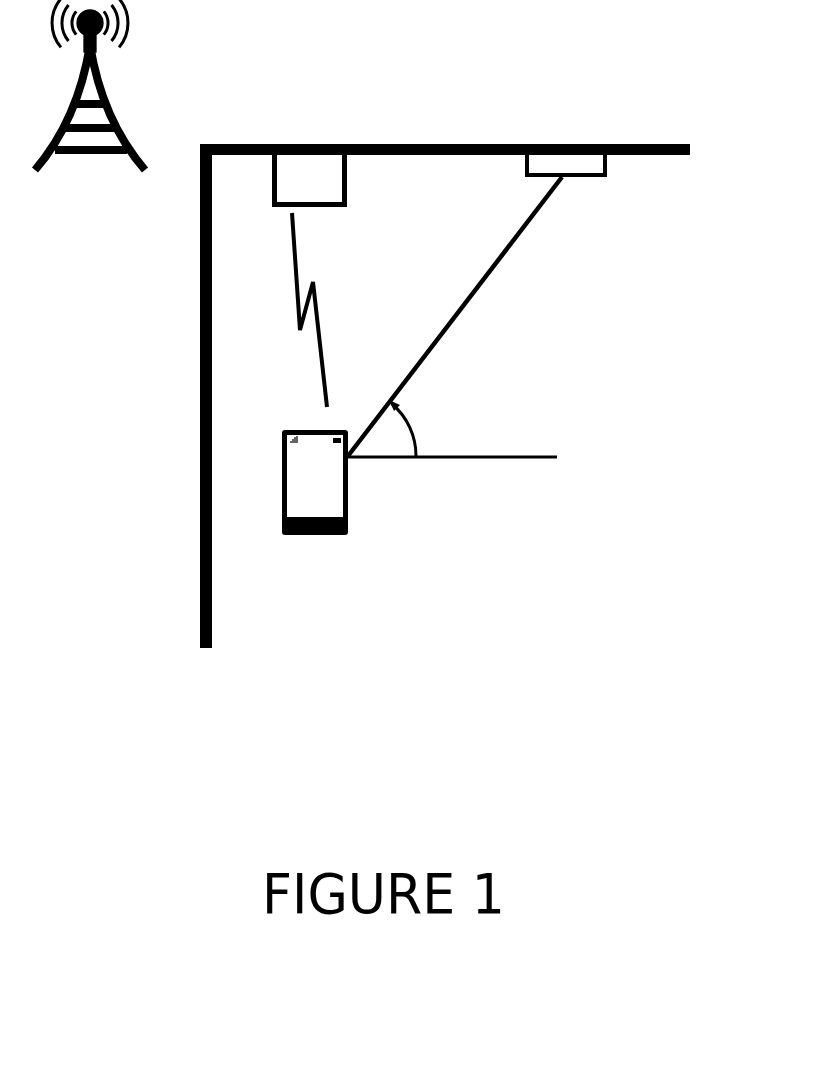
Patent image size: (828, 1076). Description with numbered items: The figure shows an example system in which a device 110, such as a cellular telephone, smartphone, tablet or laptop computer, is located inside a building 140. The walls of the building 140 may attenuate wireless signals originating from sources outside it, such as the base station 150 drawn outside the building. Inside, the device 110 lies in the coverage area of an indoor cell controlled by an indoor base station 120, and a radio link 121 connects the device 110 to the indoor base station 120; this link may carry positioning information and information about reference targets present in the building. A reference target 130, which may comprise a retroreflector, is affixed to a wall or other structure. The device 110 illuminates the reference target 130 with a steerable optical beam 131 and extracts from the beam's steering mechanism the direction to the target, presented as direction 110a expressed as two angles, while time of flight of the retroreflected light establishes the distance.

The device 110 is at (308, 535).
The direction 110a is at (416, 431).
The indoor base station 120 is at (310, 179).
The radio link 121 is at (313, 283).
The reference target 130 is at (607, 172).
The steerable optical beam 131 is at (473, 291).
The building 140 is at (200, 578).
The base station 150 is at (97, 157).